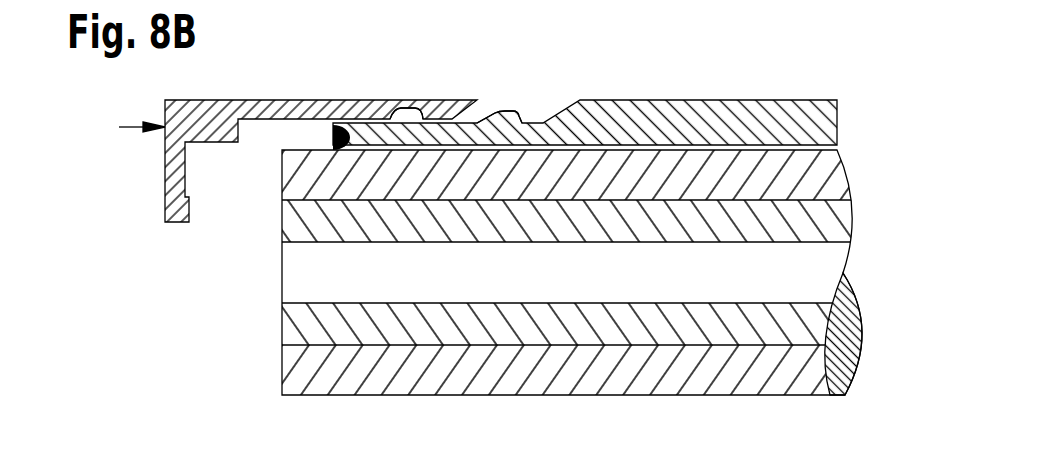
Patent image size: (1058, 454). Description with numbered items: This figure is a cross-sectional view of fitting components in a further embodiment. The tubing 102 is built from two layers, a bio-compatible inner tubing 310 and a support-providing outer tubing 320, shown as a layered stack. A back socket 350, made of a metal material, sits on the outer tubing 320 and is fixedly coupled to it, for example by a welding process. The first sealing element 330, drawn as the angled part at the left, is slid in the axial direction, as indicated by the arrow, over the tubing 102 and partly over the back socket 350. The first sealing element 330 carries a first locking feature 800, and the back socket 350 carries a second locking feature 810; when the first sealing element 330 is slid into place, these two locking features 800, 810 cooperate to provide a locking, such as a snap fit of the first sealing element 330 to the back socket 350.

The tubing 102 is at (881, 125).
The inner tubing 310 is at (830, 221).
The outer tubing 320 is at (835, 177).
The first sealing element 330 is at (313, 106).
The back socket 350 is at (782, 122).
The first locking feature 800 is at (410, 103).
The second locking feature 810 is at (503, 112).